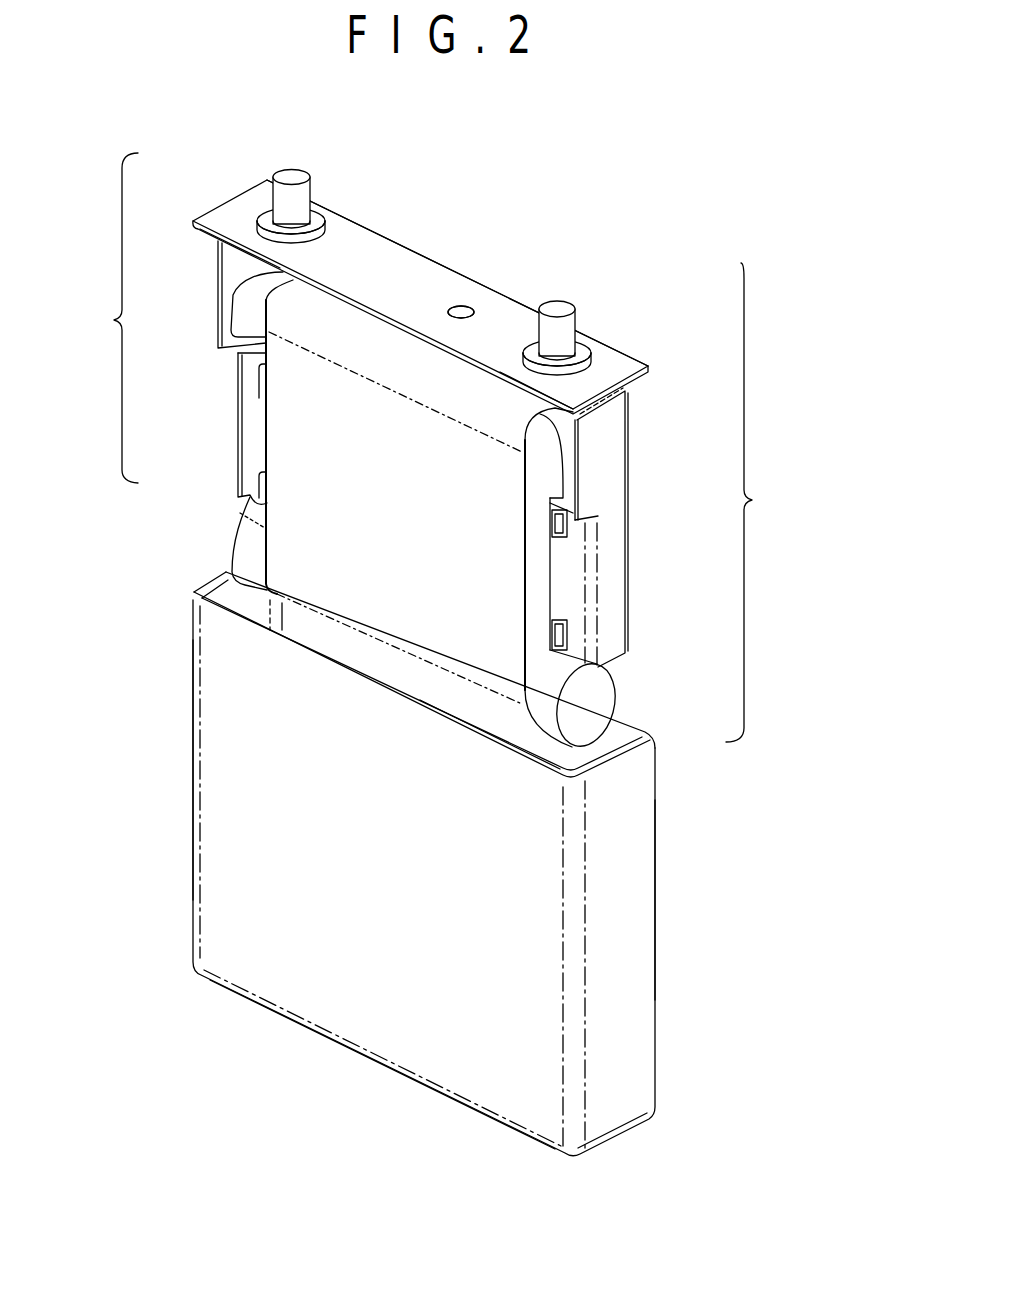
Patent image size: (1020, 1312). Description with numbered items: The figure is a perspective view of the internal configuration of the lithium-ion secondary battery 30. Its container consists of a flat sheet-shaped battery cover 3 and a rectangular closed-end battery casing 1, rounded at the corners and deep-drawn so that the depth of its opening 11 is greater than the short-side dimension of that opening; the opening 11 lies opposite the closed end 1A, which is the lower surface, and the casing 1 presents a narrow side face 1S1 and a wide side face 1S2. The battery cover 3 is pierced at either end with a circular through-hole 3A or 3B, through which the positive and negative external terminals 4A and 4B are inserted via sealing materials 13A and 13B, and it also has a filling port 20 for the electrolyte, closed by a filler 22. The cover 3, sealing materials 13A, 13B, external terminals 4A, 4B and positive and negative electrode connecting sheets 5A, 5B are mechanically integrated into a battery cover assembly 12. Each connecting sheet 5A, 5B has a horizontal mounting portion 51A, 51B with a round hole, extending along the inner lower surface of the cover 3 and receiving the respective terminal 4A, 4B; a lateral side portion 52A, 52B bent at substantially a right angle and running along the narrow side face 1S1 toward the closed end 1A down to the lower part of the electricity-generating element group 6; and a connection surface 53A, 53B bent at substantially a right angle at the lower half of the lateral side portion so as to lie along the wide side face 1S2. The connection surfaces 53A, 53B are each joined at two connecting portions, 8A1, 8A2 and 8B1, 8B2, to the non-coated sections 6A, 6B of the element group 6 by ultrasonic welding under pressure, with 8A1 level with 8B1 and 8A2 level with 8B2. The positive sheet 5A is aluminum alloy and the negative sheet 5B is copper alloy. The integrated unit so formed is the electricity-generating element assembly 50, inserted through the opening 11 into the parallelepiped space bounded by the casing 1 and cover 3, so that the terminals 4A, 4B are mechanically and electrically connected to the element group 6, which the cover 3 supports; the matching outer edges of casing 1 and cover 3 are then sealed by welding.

The battery casing 1 is at (374, 871).
The closed end 1A is at (300, 1022).
The narrow side face 1S1 is at (628, 838).
The wide side face 1S2 is at (226, 688).
The battery cover 3 is at (410, 306).
The through-hole 3A is at (290, 247).
The through-hole 3B is at (556, 375).
The positive electrode external terminal 4A is at (303, 167).
The negative electrode external terminal 4B is at (571, 300).
The sealing material 13A is at (328, 220).
The sealing material 13B is at (594, 348).
The positive electrode connecting sheet 5A is at (242, 409).
The negative electrode connecting sheet 5B is at (560, 559).
The upper portion of first bracket 51A is at (286, 294).
The mounting portion 51B is at (522, 384).
The lateral side portion 52A is at (236, 352).
The lateral side portion 52B is at (602, 470).
The connection surface 53A is at (248, 430).
The connection surface 53B is at (567, 576).
The electricity-generating element group 6 is at (391, 507).
The non-coated section 6A is at (248, 537).
The non-coated section 6B is at (567, 666).
The connecting portion 8A1 is at (262, 400).
The connecting portion 8A2 is at (262, 508).
The connecting portion 8B1 is at (552, 516).
The connecting portion 8B2 is at (553, 636).
The opening 11 is at (537, 745).
The battery cover assembly 12 is at (230, 349).
The filling port 20 is at (468, 308).
The through hole 22 is at (461, 312).
The lithium-ion secondary battery 30 is at (457, 186).
The electricity-generating element assembly 50 is at (603, 498).